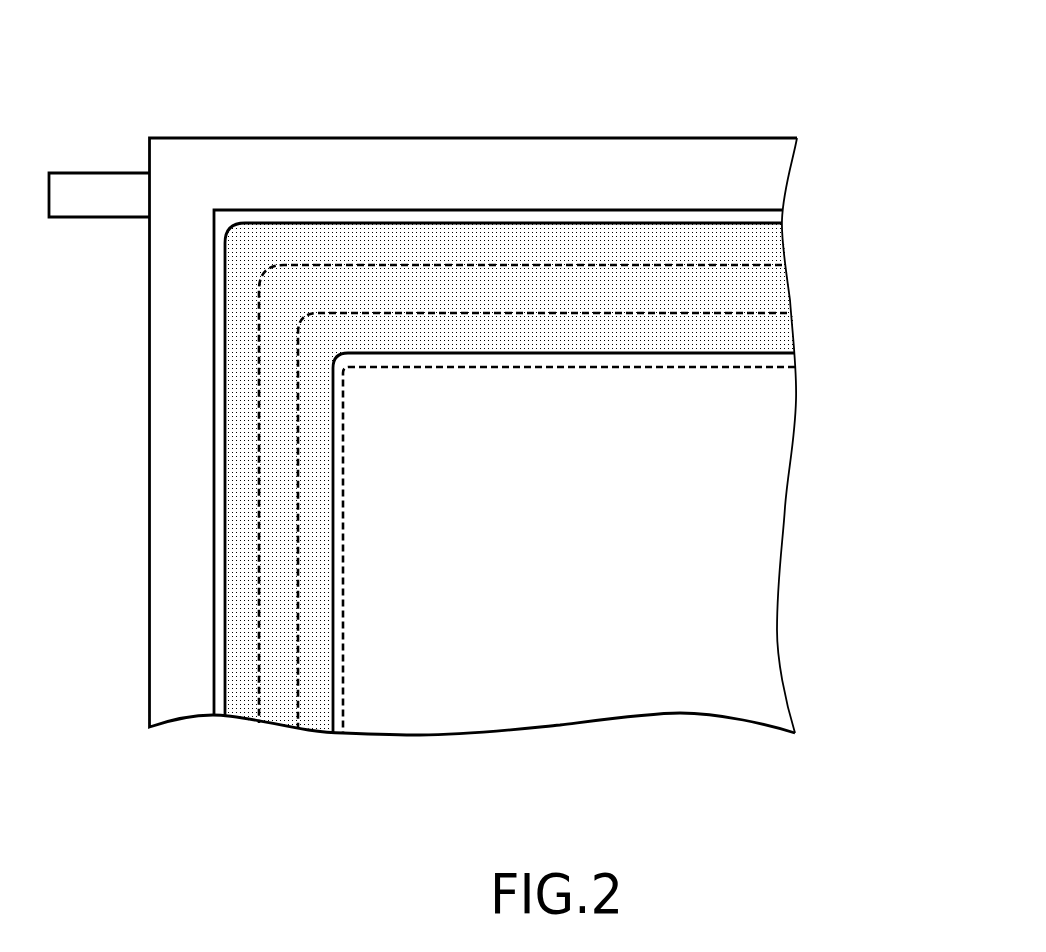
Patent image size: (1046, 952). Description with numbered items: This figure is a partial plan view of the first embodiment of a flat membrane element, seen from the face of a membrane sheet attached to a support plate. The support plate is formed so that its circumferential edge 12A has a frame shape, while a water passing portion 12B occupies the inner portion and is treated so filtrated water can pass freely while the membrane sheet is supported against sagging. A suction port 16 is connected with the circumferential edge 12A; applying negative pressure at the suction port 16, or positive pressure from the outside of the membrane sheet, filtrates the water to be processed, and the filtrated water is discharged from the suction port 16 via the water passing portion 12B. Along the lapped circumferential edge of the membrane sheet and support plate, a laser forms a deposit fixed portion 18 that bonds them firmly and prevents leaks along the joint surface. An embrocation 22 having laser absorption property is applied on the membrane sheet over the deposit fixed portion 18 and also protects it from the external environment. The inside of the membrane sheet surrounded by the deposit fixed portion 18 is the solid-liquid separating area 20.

The circumferential edge 12A is at (735, 178).
The suction port 16 is at (104, 197).
The embrocation 22 is at (735, 253).
The deposit fixed portion 18 is at (742, 295).
The solid-liquid separating area 20 is at (728, 502).
The water passing portion 12B is at (735, 590).